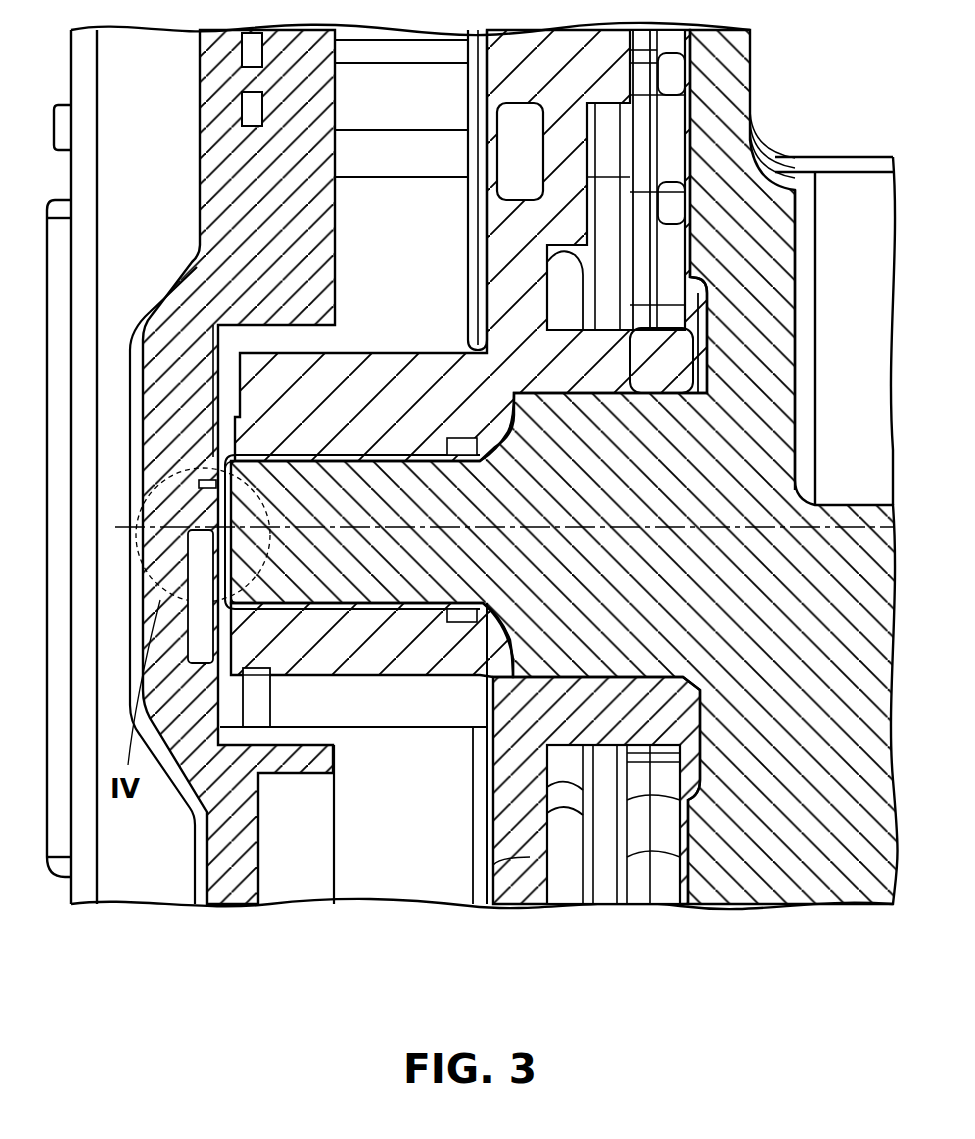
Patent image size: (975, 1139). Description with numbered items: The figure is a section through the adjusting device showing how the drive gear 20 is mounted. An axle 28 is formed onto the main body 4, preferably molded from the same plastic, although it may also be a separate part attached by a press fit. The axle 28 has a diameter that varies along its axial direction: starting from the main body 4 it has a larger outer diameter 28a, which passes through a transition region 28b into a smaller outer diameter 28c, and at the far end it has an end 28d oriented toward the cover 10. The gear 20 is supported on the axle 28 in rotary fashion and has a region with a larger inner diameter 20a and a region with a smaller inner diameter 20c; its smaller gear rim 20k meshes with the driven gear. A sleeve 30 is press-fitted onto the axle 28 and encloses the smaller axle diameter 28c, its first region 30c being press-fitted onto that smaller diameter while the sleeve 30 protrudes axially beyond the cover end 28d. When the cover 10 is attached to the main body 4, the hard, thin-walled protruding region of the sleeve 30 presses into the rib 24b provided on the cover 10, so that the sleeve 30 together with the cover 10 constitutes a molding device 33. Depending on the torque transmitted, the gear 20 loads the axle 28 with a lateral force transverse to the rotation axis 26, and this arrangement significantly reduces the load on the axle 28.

The main body 4 is at (823, 897).
The cover 10 is at (233, 897).
The drive gear 20 is at (565, 897).
The region with a larger inner diameter 20a is at (628, 400).
The region with a smaller inner diameter 20c is at (383, 452).
The smaller gear rim 20k is at (410, 713).
The rib 24b is at (207, 517).
The rotation axis 26 is at (563, 527).
The axle 28 is at (619, 606).
The larger outer diameter 28a is at (597, 663).
The transition region 28b is at (507, 427).
The smaller outer diameter 28c is at (350, 607).
The end oriented toward the cover 28d is at (240, 510).
The sleeve 30 is at (352, 455).
The first region of the sleeve 30c is at (333, 468).
The molding device 33 is at (207, 468).